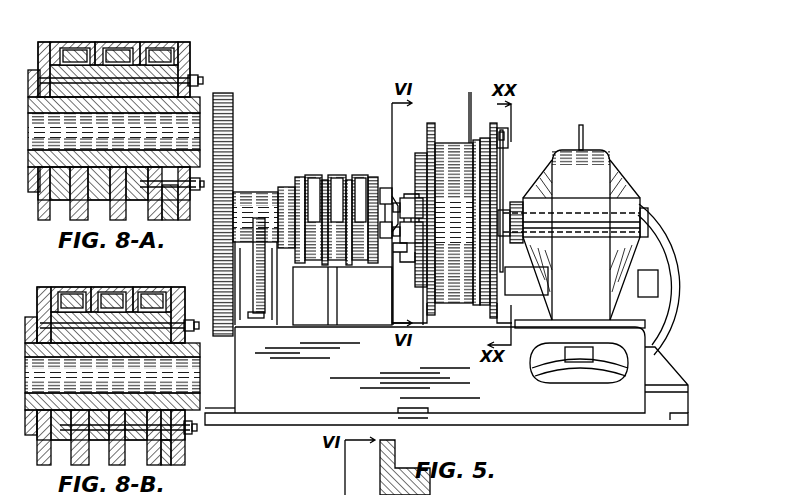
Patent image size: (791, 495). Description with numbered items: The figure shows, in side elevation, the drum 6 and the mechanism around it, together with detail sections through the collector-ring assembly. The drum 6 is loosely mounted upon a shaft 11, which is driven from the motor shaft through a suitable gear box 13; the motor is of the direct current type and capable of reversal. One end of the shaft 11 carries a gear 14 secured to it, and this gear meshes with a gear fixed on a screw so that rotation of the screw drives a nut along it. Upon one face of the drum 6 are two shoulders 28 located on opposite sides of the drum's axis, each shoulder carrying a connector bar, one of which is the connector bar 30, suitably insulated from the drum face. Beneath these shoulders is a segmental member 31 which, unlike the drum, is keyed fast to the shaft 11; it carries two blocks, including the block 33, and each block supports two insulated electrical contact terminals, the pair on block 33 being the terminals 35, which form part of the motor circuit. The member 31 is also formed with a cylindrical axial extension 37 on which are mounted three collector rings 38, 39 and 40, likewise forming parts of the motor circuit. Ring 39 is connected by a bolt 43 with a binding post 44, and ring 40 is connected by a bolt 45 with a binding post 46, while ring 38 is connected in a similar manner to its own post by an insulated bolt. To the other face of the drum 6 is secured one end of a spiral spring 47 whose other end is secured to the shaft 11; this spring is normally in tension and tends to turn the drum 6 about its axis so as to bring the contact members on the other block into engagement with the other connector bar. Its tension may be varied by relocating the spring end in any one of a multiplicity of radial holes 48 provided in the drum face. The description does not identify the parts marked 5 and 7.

In FIG. 5, the flywheel 5 is at (681, 246).
In FIG. 5, the drum 6 is at (455, 143).
In FIG. 5, the motor lead 7 is at (470, 92).
In FIG. 8A, the shaft 11 is at (204, 124).
In FIG. 8B, the shaft 11 is at (195, 378).
In FIG. 5, the shaft 11 is at (255, 195).
In FIG. 5, the gear box 13 is at (620, 183).
In FIG. 5, the gear 14 is at (233, 123).
In FIG. 5, the shoulders 28 is at (412, 198).
In FIG. 5, the connector bar 30 is at (415, 186).
In FIG. 5, the segmental member 31 is at (447, 245).
In FIG. 5, the block 33 is at (453, 245).
In FIG. 5, the electrical contact terminals 35 is at (407, 262).
In FIG. 8A, the cylindrical axial extension 37 is at (200, 98).
In FIG. 8B, the cylindrical axial extension 37 is at (196, 406).
In FIG. 8A, the collector ring 38 is at (118, 47).
In FIG. 8B, the collector ring 38 is at (114, 293).
In FIG. 5, the collector ring 38 is at (335, 177).
In FIG. 8A, the collector ring 39 is at (156, 47).
In FIG. 8B, the collector ring 39 is at (156, 293).
In FIG. 5, the collector ring 39 is at (358, 177).
In FIG. 8A, the collector ring 40 is at (76, 47).
In FIG. 8B, the collector ring 40 is at (72, 293).
In FIG. 5, the collector ring 40 is at (313, 177).
In FIG. 8A, the bolt 43 is at (165, 220).
In FIG. 8A, the binding post 44 is at (193, 195).
In FIG. 8B, the bolt 45 is at (68, 455).
In FIG. 8B, the binding post 46 is at (194, 436).
In FIG. 8B, the spiral spring 47 is at (192, 440).
In FIG. 5, the spiral spring 47 is at (503, 166).
In FIG. 5, the radial holes 48 is at (508, 132).